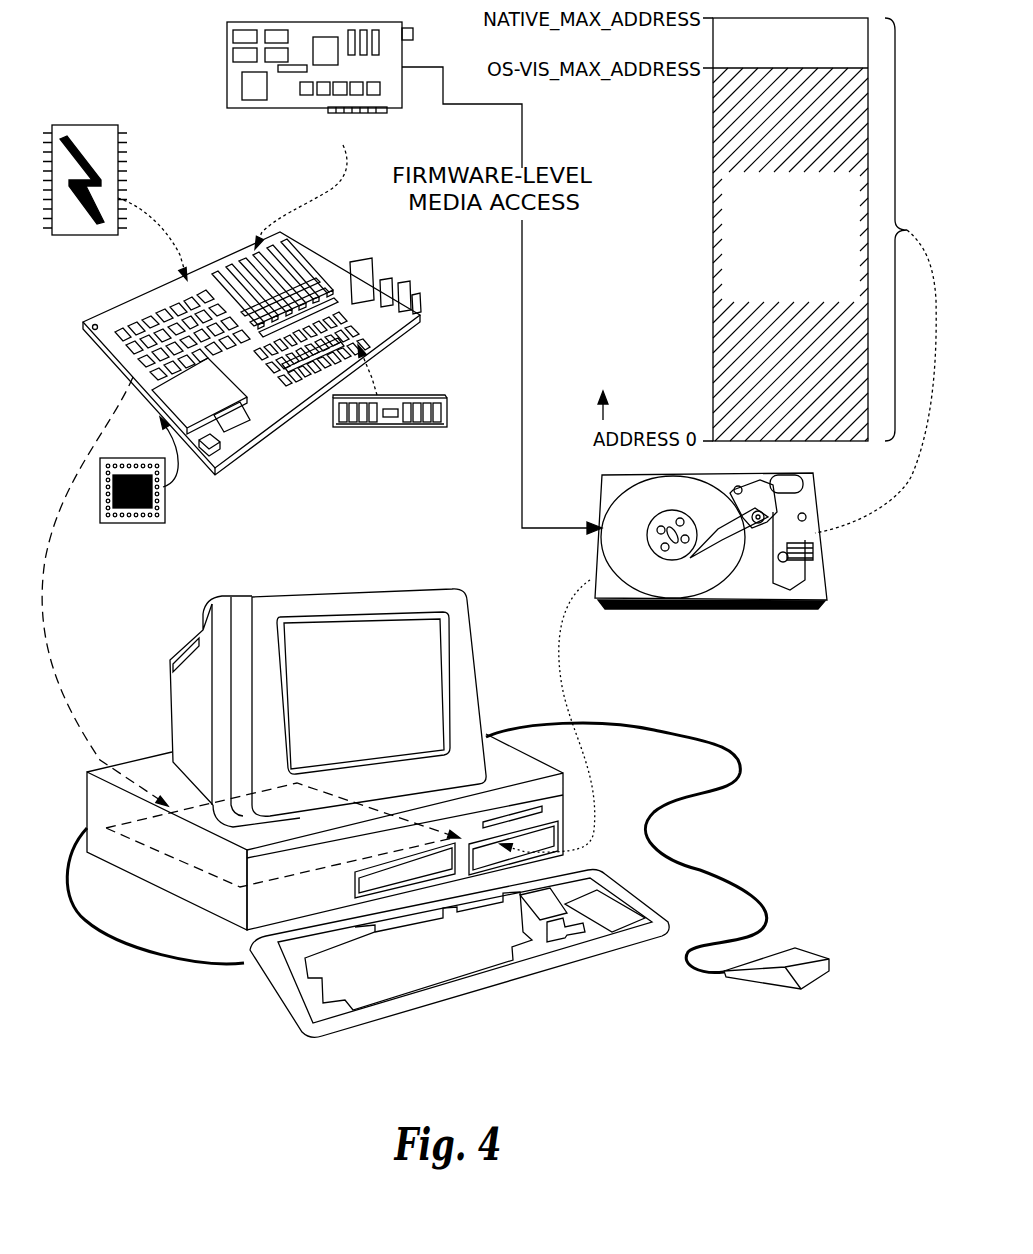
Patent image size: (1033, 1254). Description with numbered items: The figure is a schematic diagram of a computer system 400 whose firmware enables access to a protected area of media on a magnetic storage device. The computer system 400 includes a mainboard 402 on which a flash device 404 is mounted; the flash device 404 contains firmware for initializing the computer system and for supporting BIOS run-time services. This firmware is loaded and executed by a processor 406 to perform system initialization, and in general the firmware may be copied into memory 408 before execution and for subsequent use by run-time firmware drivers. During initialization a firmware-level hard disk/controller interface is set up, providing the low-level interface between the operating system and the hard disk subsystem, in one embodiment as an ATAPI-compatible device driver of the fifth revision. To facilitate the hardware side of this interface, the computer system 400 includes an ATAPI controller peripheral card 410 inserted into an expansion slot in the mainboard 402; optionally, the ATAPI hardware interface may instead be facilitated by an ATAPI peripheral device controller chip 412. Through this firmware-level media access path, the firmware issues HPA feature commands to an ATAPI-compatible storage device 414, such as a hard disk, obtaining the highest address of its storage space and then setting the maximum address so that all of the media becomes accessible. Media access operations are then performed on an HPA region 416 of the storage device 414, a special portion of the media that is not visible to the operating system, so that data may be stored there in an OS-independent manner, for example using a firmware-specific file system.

The computer system 400 is at (723, 1073).
The mainboard 402 is at (133, 366).
The flash device 404 is at (113, 143).
The processor 406 is at (162, 523).
The memory 408 is at (390, 421).
The ATAPI 5 controller peripheral card 410 is at (234, 70).
The ATAPI peripheral device controller chip 412 is at (240, 254).
The ATAPI 5-compatible storage device 414 is at (810, 608).
The HPA region 416 is at (720, 43).